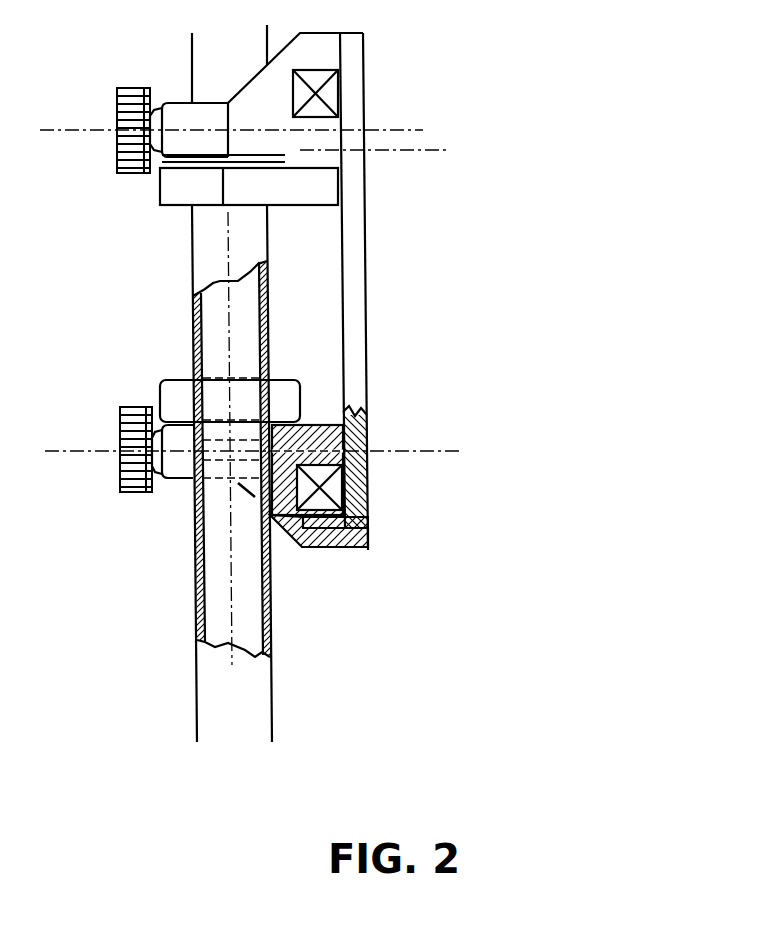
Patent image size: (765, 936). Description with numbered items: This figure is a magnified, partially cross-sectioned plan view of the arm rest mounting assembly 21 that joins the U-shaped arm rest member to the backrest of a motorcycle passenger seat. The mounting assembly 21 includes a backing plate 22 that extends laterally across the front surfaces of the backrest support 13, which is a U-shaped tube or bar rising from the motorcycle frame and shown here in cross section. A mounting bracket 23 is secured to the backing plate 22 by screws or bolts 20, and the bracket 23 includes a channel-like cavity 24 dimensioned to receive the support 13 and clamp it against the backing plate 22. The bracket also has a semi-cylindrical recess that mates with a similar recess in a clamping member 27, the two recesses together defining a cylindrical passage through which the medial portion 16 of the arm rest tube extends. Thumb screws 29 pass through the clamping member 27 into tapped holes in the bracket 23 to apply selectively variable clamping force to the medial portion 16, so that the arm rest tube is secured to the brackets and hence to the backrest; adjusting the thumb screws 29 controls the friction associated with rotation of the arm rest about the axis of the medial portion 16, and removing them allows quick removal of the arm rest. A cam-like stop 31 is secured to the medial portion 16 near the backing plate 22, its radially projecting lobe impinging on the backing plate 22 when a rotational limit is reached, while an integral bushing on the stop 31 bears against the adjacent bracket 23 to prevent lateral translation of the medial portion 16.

The backrest support 13 is at (340, 95).
The medial portion 16 is at (257, 240).
The screws or bolts 20 is at (370, 535).
The mounting assembly 21 is at (428, 301).
The backing plate 22 is at (355, 418).
The mounting bracket 23 is at (313, 146).
The channel-like cavity 24 is at (368, 488).
The clamping member 27 is at (175, 101).
The thumb screws 29 is at (118, 480).
The cam-like stop 31 is at (240, 183).